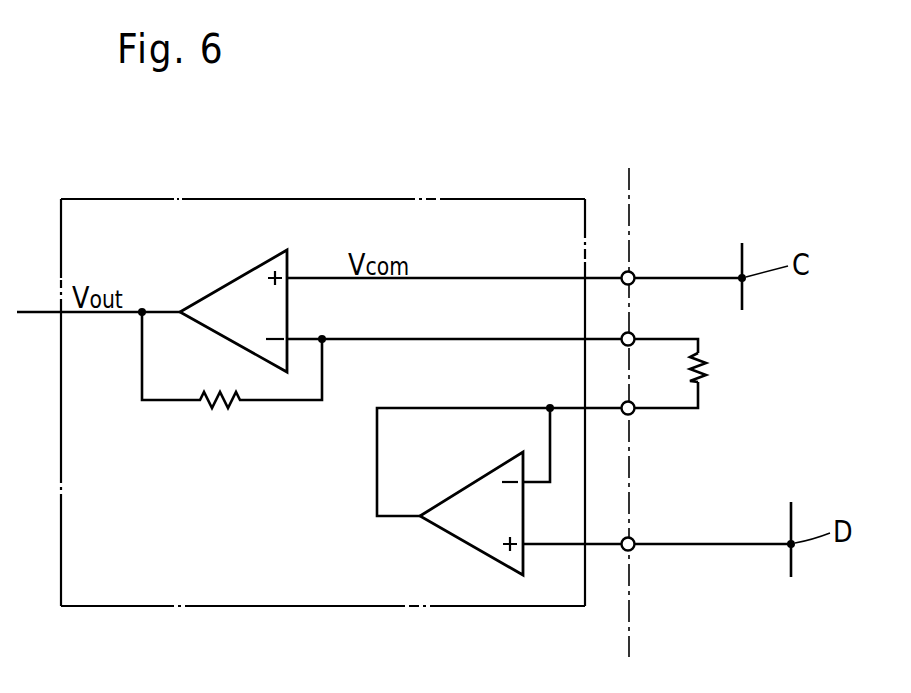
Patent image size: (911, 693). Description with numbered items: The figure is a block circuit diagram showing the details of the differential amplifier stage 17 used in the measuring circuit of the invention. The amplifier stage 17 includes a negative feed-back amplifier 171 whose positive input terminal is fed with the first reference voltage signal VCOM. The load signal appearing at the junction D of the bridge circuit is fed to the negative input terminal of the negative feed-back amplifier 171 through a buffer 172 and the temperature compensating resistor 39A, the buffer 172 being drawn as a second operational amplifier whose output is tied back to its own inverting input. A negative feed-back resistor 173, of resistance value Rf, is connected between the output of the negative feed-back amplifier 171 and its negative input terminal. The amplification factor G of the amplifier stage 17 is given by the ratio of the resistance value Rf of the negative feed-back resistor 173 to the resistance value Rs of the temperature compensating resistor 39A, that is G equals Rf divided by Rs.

The amplifier stage 17 is at (390, 198).
The negative feed-back amplifier 171 is at (220, 287).
The buffer 172 is at (460, 542).
The negative feed-back resistor 173 is at (225, 410).
The temperature compensating resistor 39A is at (708, 362).